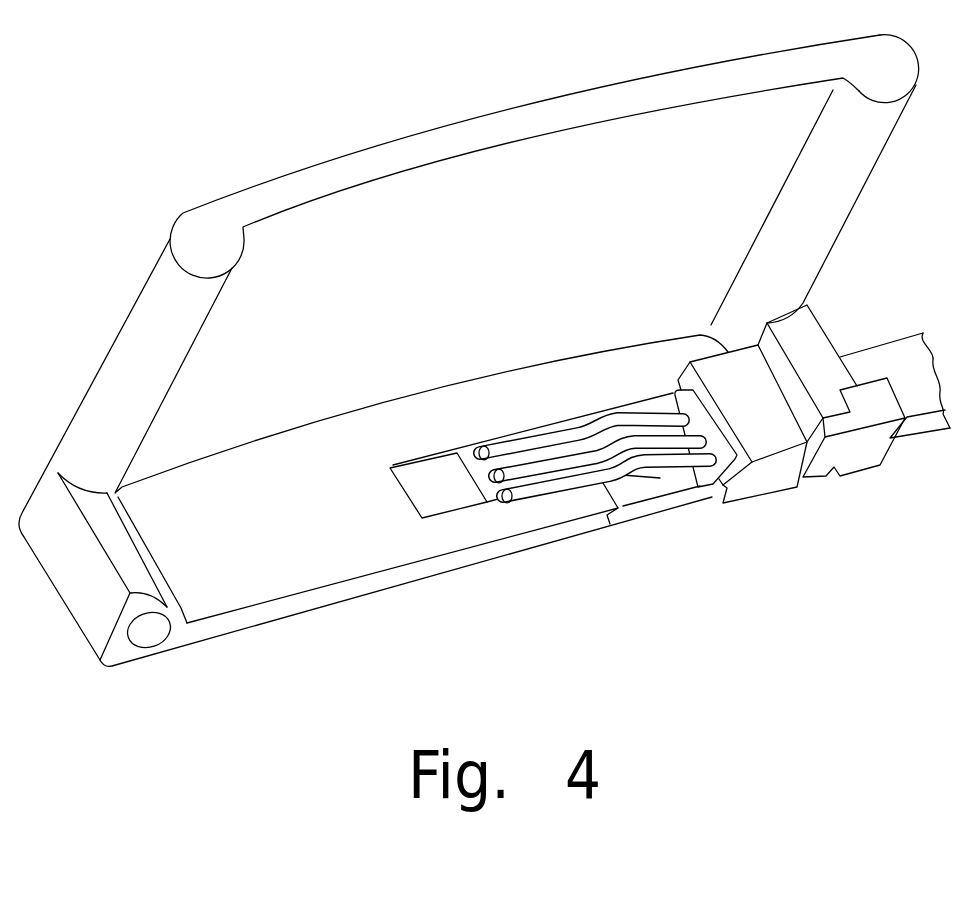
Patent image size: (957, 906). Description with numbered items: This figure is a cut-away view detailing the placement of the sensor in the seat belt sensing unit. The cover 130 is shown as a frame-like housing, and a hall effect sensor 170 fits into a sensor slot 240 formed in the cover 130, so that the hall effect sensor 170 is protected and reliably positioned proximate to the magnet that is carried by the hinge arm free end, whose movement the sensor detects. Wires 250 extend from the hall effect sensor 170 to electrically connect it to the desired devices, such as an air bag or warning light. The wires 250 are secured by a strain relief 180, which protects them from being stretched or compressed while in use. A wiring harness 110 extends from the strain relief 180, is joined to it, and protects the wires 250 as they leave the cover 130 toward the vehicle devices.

The cover 130 is at (443, 126).
The wiring harness 110 is at (902, 357).
The strain relief 180 is at (768, 485).
The hall effect sensor 170 is at (425, 493).
The wires 250 is at (550, 458).
The sensor slot 240 is at (653, 495).